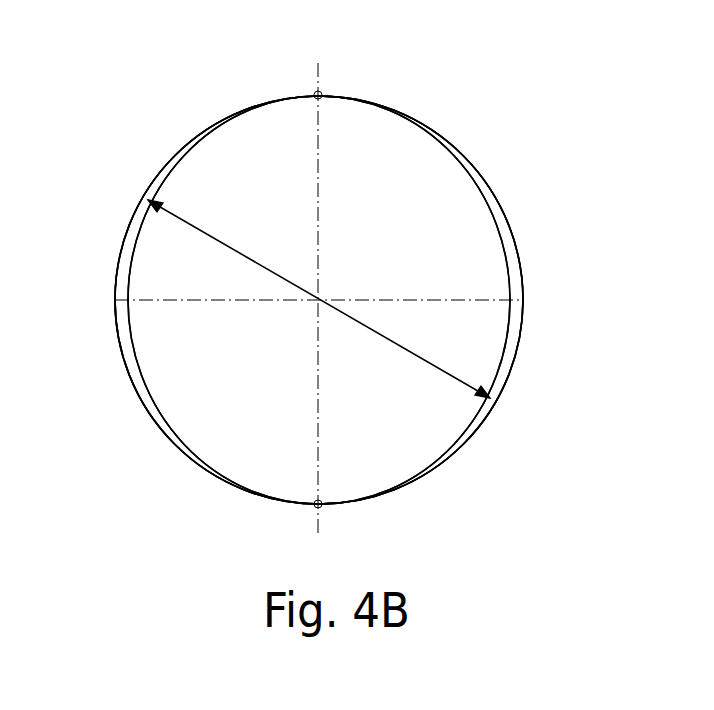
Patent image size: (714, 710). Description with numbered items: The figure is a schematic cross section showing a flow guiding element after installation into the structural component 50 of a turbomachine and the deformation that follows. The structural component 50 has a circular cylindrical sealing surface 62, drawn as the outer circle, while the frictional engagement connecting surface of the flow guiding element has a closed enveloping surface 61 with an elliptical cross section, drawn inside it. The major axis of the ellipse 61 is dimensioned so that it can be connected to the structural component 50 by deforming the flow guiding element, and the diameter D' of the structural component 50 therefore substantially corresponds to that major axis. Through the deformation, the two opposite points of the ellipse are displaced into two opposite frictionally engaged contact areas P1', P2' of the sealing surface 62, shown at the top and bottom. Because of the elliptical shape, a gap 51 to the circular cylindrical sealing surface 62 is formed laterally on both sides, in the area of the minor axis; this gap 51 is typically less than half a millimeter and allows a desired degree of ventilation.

The structural component 50 is at (522, 377).
The gap 51 is at (522, 311).
The closed enveloping surface 61 is at (483, 195).
The circular cylindrical sealing surface 62 is at (523, 260).
The diameter D' is at (319, 299).
The frictionally engaged contact area P1' is at (378, 63).
The frictionally engaged contact area P2' is at (375, 539).